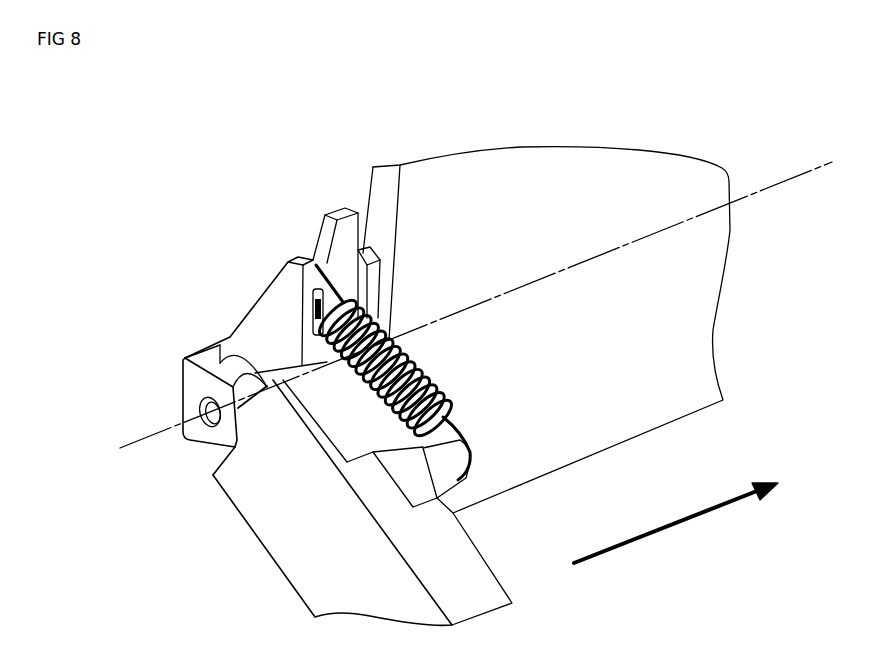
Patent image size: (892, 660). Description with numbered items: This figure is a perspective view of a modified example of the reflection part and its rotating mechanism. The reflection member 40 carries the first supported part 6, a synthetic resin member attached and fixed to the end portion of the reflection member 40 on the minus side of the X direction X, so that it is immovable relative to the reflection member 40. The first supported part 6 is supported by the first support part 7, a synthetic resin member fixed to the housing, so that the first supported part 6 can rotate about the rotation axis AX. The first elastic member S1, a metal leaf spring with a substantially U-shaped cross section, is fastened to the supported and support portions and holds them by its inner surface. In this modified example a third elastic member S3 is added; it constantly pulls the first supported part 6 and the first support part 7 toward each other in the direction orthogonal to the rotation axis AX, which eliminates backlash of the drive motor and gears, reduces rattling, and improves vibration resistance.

The reflection member 40 is at (458, 190).
The first supported part 6 is at (300, 356).
The first support part 7 is at (272, 520).
The first elastic member S1 is at (193, 390).
The third elastic member S3 is at (442, 420).
The rotation axis AX is at (443, 316).
The X direction X is at (691, 514).